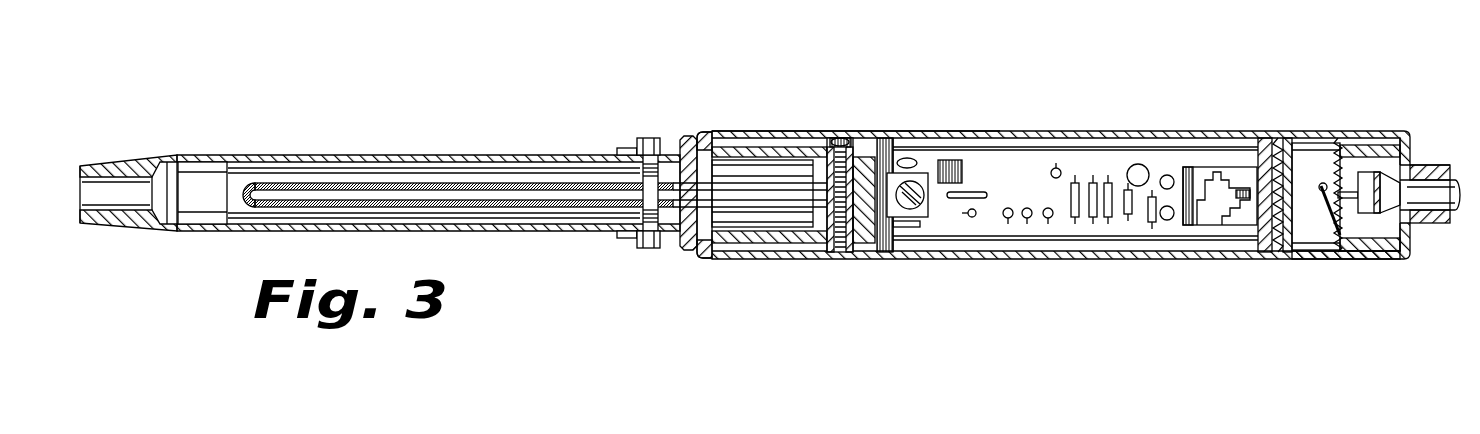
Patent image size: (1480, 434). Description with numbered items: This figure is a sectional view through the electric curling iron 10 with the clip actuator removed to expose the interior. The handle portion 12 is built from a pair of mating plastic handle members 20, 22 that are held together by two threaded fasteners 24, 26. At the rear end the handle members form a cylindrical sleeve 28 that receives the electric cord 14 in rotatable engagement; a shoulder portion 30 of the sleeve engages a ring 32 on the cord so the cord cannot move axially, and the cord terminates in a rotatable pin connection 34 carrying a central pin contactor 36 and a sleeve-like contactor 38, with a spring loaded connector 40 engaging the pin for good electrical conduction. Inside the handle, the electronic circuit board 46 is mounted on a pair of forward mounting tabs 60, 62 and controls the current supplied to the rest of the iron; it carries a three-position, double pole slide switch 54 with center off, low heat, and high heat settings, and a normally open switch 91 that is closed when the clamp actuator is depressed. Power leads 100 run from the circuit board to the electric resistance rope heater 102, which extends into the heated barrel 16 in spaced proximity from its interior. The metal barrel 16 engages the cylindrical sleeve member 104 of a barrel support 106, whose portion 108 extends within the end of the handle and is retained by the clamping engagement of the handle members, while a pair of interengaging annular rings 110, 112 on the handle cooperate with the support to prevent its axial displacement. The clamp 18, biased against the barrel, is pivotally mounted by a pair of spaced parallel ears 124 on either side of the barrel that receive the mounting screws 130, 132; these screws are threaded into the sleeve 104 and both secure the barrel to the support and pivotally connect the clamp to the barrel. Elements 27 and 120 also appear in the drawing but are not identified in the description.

The electric curling iron 10 is at (924, 123).
The handle portion 12 is at (1012, 259).
The electric cord 14 is at (1460, 163).
The heated barrel 16 is at (260, 231).
The clamp 18 is at (628, 149).
The handle member 20 is at (1342, 133).
The handle member 22 is at (1293, 258).
The threaded fastener 24 is at (1267, 137).
The threaded fastener 26 is at (838, 138).
The push button tip 27 is at (1447, 213).
The cylindrical sleeve 28 is at (1433, 222).
The shoulder portion 30 is at (1415, 165).
The ring 32 is at (1393, 210).
The rotatable pin connection 34 is at (1363, 167).
The central pin contactor 36 is at (1313, 187).
The sleeve-like contactor 38 is at (1347, 255).
The spring loaded connector 40 is at (1303, 137).
The electronic circuit board 46 is at (1087, 165).
The slide switch 54 is at (1197, 165).
The forward mounting tab 60 is at (880, 137).
The forward mounting tab 62 is at (887, 241).
The normally open switch 91 is at (932, 196).
The power leads 100 is at (745, 180).
The electric resistance rope heater 102 is at (372, 182).
The cylindrical sleeve member 104 is at (672, 235).
The barrel support 106 is at (700, 255).
The portion 108 is at (808, 243).
The annular ring 110 is at (723, 258).
The annular ring 112 is at (792, 132).
The tip 120 is at (122, 228).
The ears 124 is at (613, 152).
The mounting screw 130 is at (650, 238).
The mounting screw 132 is at (643, 139).